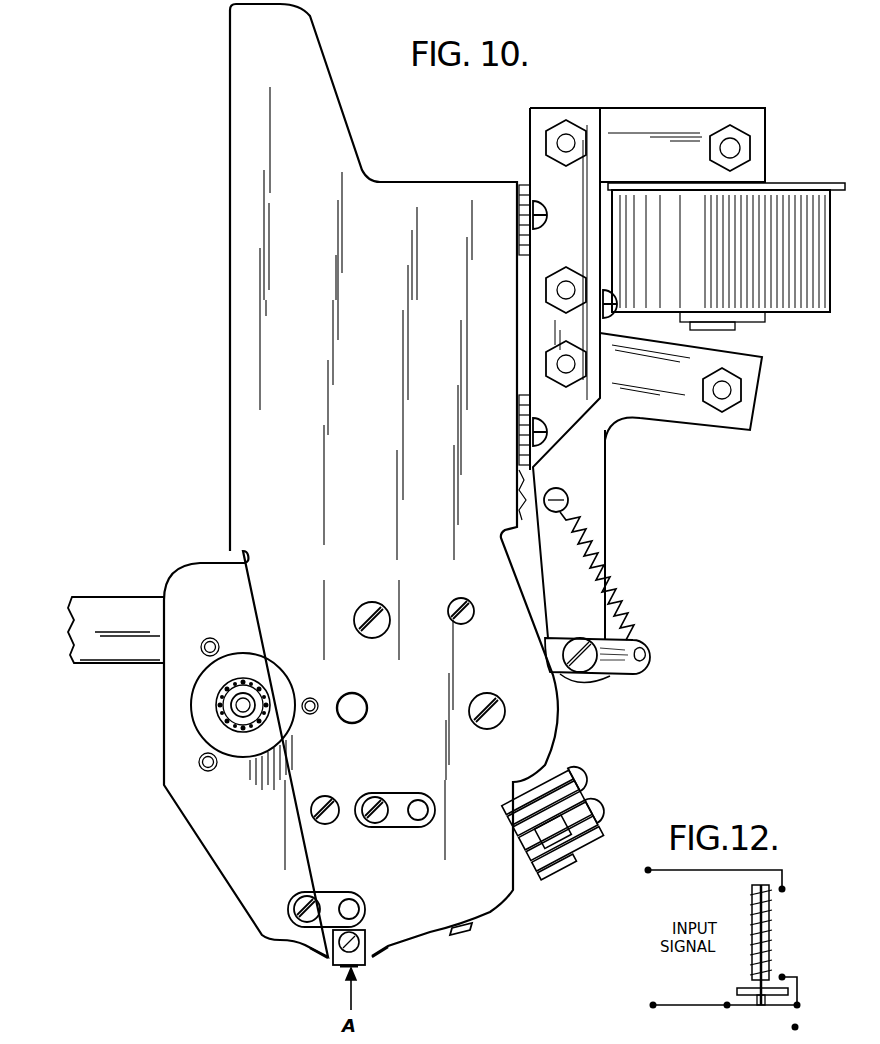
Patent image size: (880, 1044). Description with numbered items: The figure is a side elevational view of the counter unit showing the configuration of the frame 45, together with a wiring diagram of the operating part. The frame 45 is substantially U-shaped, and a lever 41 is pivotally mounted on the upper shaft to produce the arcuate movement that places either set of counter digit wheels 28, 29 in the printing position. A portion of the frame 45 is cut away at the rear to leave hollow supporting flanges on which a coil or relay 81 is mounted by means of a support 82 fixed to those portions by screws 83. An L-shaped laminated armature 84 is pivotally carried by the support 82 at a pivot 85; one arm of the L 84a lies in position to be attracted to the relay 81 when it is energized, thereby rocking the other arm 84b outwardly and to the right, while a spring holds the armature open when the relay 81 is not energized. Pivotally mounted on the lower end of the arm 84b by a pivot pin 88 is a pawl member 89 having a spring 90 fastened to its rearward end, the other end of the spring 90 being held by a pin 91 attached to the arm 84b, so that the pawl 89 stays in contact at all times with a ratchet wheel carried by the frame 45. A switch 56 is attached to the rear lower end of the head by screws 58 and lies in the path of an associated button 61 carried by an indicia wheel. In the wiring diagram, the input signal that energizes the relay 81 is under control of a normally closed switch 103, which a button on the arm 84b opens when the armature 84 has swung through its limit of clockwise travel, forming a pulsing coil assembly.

In FIG. 10, the frame 45 is at (245, 424).
In FIG. 10, the lever 41 is at (120, 604).
In FIG. 10, the support 82 is at (710, 116).
In FIG. 10, the coil or relay 81 is at (808, 188).
In FIG. 12, the coil or relay 81 is at (772, 930).
In FIG. 10, the screws 83 is at (548, 213).
In FIG. 10, the pivot 85 is at (568, 362).
In FIG. 10, the L-shaped laminated armature 84 is at (622, 489).
In FIG. 12, the L-shaped laminated armature 84 is at (742, 988).
In FIG. 10, the arm of the L 84a is at (752, 410).
In FIG. 10, the other arm of the L 84b is at (604, 540).
In FIG. 10, the pin 91 is at (566, 496).
In FIG. 10, the spring 90 is at (608, 590).
In FIG. 10, the pivot pin 88 is at (577, 645).
In FIG. 10, the pawl member 89 is at (628, 668).
In FIG. 10, the screws 58 is at (562, 792).
In FIG. 10, the switch 56 is at (571, 854).
In FIG. 10, the button 61 is at (562, 865).
In FIG. 10, the counter digit wheels 28 is at (488, 926).
In FIG. 10, the counter digit wheels 29 is at (332, 962).
In FIG. 12, the normally closed switch 103 is at (760, 1000).